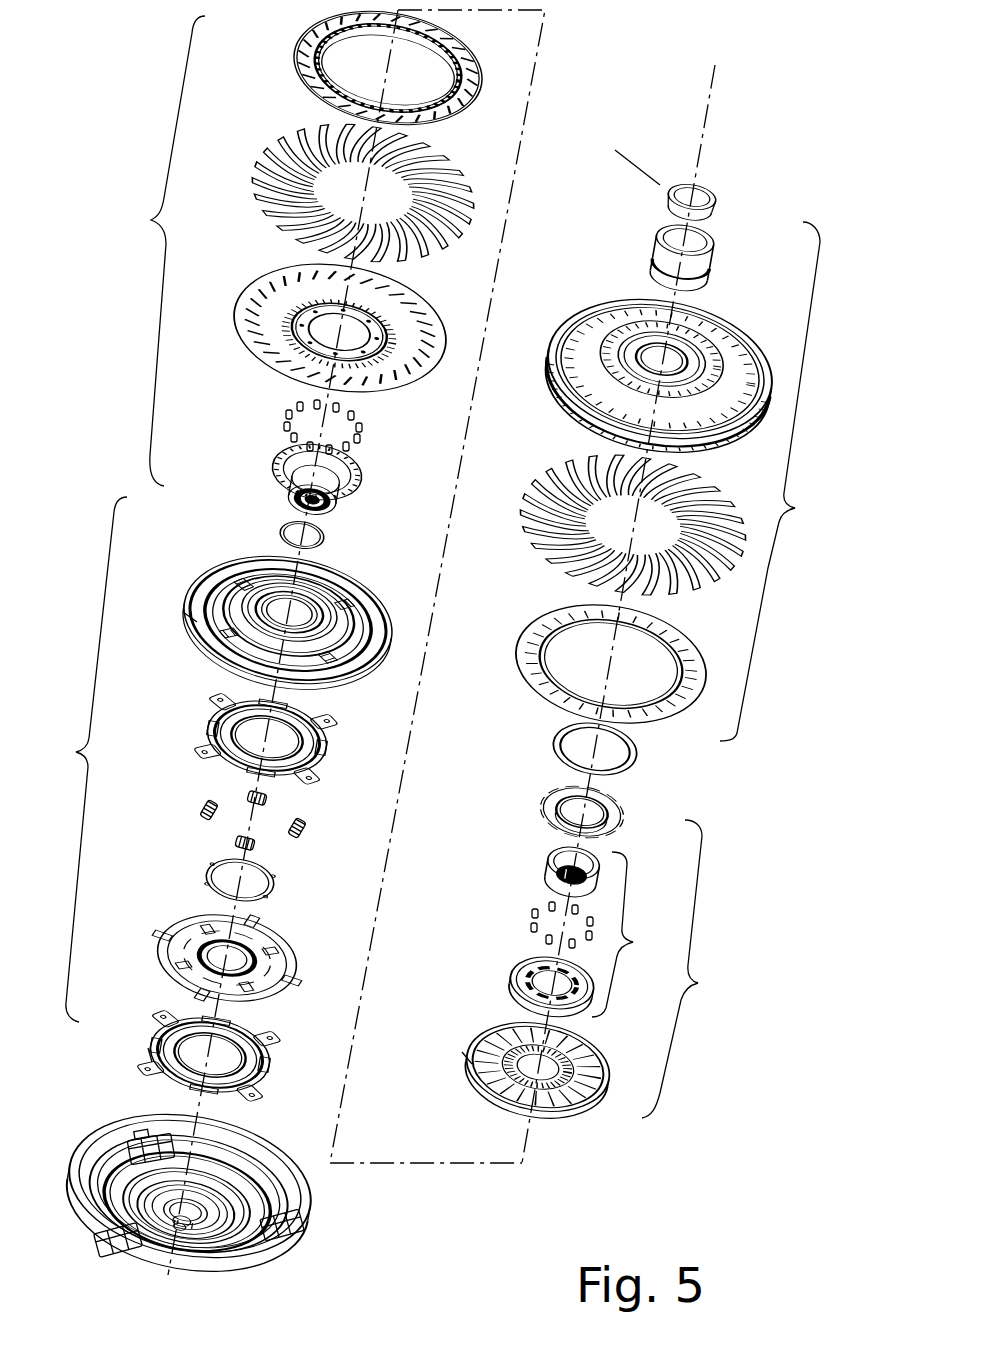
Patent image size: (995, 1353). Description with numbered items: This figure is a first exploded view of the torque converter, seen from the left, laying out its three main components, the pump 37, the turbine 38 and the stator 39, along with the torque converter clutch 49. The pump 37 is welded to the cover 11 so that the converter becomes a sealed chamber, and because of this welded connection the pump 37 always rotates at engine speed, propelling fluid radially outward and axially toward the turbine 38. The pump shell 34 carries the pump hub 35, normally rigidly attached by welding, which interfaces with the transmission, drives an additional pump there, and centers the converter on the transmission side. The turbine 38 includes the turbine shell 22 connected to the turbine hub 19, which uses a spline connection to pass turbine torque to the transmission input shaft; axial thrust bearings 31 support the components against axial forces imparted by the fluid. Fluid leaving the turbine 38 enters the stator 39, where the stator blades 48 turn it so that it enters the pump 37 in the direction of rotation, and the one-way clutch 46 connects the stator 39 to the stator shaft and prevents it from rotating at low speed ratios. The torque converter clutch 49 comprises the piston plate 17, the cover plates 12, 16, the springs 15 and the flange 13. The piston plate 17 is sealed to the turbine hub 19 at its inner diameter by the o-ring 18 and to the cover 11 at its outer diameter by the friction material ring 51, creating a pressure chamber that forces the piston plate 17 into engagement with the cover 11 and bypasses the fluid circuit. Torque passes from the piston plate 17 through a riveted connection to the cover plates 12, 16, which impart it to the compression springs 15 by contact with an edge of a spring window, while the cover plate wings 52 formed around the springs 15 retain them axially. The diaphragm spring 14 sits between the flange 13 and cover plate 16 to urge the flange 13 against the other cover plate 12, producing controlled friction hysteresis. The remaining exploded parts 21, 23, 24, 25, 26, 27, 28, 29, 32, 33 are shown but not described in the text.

The cover 11 is at (100, 1110).
The cover plate 12 is at (140, 1020).
The flange 13 is at (155, 923).
The diaphragm spring 14 is at (195, 868).
The springs 15 is at (187, 785).
The cover plate 16 is at (187, 700).
The piston plate 17 is at (178, 566).
The o-ring 18 is at (260, 513).
The turbine hub 19 is at (253, 457).
The rollers 21 is at (275, 405).
The turbine shell 22 is at (240, 287).
The impeller blades 23 is at (260, 157).
The impeller core ring 24 is at (282, 55).
The stator 25 is at (455, 1030).
The one-way clutch cage 26 is at (498, 960).
The rollers 27 is at (518, 910).
The bearing 28 is at (533, 853).
The thrust washer 29 is at (533, 792).
The axial thrust bearings 31 is at (540, 725).
The turbine core ring 32 is at (522, 607).
The turbine blades 33 is at (548, 468).
The pump shell 34 is at (572, 295).
The pump hub 35 is at (642, 240).
The pump 37 is at (785, 481).
The turbine 38 is at (161, 251).
The stator 39 is at (698, 969).
The one-way clutch 46 is at (639, 934).
The stator blades 48 is at (467, 1058).
The torque converter clutch 49 is at (78, 759).
The friction material ring 51 is at (190, 617).
The cover plate wings 52 is at (153, 1054).